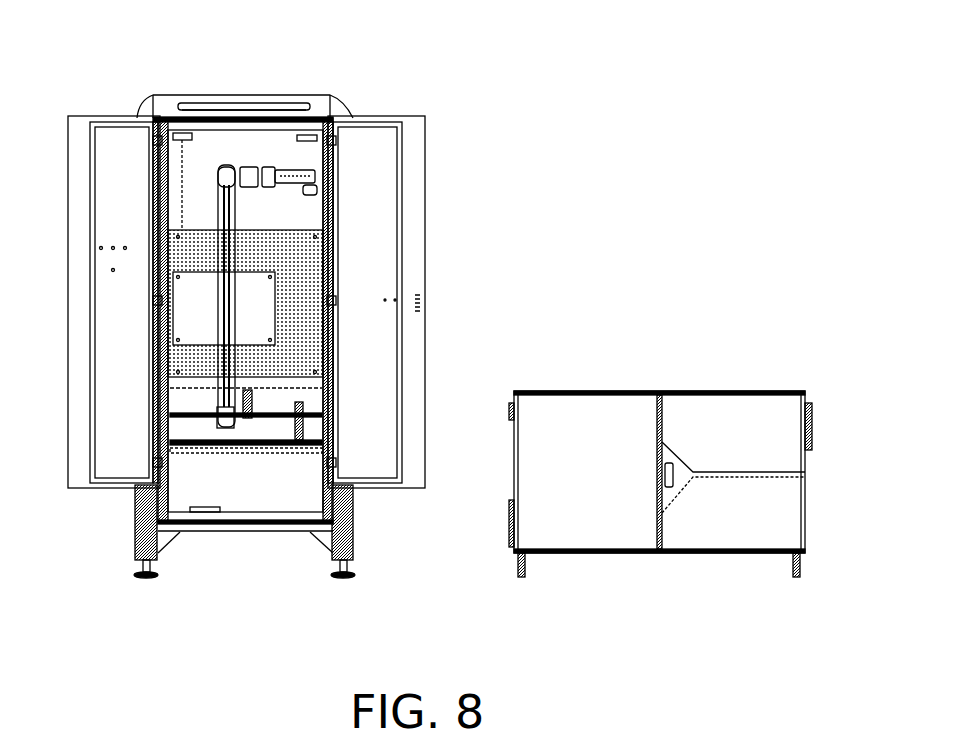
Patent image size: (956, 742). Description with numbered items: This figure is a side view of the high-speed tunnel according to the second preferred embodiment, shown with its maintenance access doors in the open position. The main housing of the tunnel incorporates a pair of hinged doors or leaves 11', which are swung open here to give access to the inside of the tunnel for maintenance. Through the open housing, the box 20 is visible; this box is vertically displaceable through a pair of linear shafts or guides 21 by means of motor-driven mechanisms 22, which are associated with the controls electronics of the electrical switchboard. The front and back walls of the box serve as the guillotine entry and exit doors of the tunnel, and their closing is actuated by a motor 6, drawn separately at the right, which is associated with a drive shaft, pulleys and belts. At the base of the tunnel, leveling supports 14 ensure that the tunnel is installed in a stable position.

The hinged doors or leaves 11' is at (250, 257).
The motor-driven mechanisms 22 is at (240, 170).
The box 20 is at (300, 273).
The linear shafts or guides 21 is at (225, 317).
The leveling supports 14 is at (353, 577).
The motor 6 is at (697, 415).